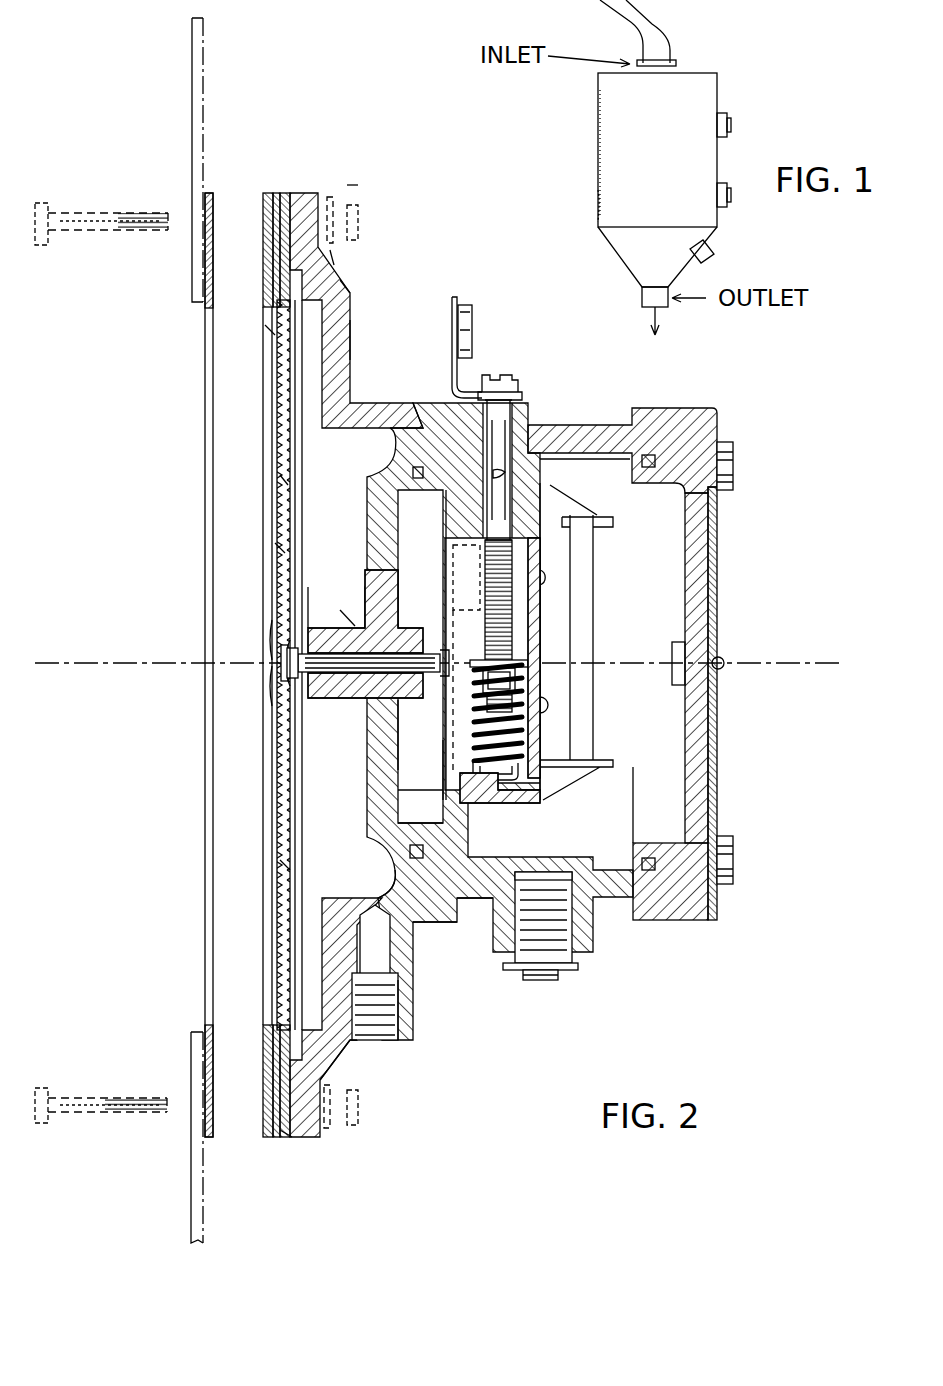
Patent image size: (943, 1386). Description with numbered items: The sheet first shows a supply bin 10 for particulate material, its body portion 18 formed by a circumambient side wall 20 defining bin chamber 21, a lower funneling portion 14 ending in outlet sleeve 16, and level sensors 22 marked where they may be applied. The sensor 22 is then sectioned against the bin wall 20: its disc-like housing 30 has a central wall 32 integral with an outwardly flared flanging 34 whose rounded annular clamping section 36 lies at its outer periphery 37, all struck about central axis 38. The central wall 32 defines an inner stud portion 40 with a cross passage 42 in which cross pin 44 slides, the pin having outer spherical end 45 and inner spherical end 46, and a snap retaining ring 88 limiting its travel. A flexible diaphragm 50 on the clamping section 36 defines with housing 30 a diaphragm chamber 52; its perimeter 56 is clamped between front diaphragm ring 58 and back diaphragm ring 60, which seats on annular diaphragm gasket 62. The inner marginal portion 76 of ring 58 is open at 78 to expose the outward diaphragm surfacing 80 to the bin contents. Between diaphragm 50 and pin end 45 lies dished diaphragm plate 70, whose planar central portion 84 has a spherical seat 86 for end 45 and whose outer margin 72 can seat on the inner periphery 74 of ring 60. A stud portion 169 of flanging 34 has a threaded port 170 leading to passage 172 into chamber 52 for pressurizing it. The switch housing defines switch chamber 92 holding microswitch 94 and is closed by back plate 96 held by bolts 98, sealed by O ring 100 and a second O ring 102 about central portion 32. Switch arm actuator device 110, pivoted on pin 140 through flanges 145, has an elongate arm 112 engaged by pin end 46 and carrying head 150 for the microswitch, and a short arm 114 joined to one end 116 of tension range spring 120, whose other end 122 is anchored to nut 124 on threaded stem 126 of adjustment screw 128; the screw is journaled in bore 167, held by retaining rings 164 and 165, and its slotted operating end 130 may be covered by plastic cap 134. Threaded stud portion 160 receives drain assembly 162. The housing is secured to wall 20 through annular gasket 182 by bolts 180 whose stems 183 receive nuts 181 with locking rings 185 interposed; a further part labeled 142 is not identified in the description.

In FIG. 1, the supply bin 10 is at (745, 62).
In FIG. 1, the lower bin funneling portion 14 is at (622, 238).
In FIG. 1, the sleeve portion 16 is at (640, 295).
In FIG. 1, the body portion 18 is at (607, 113).
In FIG. 1, the side wall 20 is at (600, 176).
In FIG. 2, the side wall 20 is at (205, 40).
In FIG. 1, the bin chamber 21 is at (600, 205).
In FIG. 2, the bin chamber 21 is at (140, 88).
In FIG. 1, the level sensor 22 is at (745, 129).
In FIG. 2, the level sensor 22 is at (366, 183).
In FIG. 2, the housing 30 is at (364, 297).
In FIG. 2, the central wall 32 is at (395, 403).
In FIG. 2, the outwardly flared flanging 34 is at (350, 340).
In FIG. 2, the annular clamping section 36 is at (300, 193).
In FIG. 2, the outer periphery 37 is at (315, 1140).
In FIG. 2, the central axis 38 is at (80, 660).
In FIG. 2, the inner stud portion 40 is at (330, 620).
In FIG. 2, the cross passage 42 is at (333, 676).
In FIG. 2, the cross pin 44 is at (348, 620).
In FIG. 2, the outer convexly spherically contoured end 45 is at (280, 678).
In FIG. 2, the inner convexly spherically contoured end 46 is at (423, 593).
In FIG. 2, the flexible diaphragm 50 is at (277, 428).
In FIG. 2, the diaphragm chamber 52 is at (276, 877).
In FIG. 2, the diaphragm perimeter 56 is at (276, 193).
In FIG. 2, the front diaphragm ring 58 is at (265, 193).
In FIG. 2, the back diaphragm ring 60 is at (285, 193).
In FIG. 2, the annular diaphragm gasket 62 is at (285, 1140).
In FIG. 2, the diaphragm plate 70 is at (297, 476).
In FIG. 2, the outer margin 72 is at (334, 262).
In FIG. 2, the inner periphery 74 is at (335, 1058).
In FIG. 2, the inner marginal portion 76 is at (262, 300).
In FIG. 2, the opening 78 is at (265, 330).
In FIG. 2, the external diaphragm surfacing 80 is at (282, 480).
In FIG. 2, the central portion 84 is at (275, 548).
In FIG. 2, the spherically contoured seat 86 is at (272, 633).
In FIG. 2, the snap type retaining ring 88 is at (278, 692).
In FIG. 2, the switch chamber 92 is at (615, 468).
In FIG. 2, the microswitch 94 is at (622, 576).
In FIG. 2, the back plate 96 is at (566, 390).
In FIG. 2, the bolts 98 is at (735, 862).
In FIG. 2, the sealing O ring 100 is at (712, 512).
In FIG. 2, the second sealing O ring 102 is at (432, 935).
In FIG. 2, the switch arm actuator device 110 is at (424, 792).
In FIG. 2, the elongate arm 112 is at (398, 775).
In FIG. 2, the short arm 114 is at (480, 803).
In FIG. 2, the spring end 116 is at (520, 770).
In FIG. 2, the tension spring 120 is at (541, 747).
In FIG. 2, the spring other end 122 is at (515, 690).
In FIG. 2, the nut 124 is at (500, 658).
In FIG. 2, the threaded stem 126 is at (540, 628).
In FIG. 2, the adjustment screw 128 is at (531, 447).
In FIG. 2, the slotted operating end 130 is at (492, 375).
In FIG. 2, the plastic cap 134 is at (460, 291).
In FIG. 2, the pin 140 is at (460, 905).
In FIG. 2, the body groove 142 is at (378, 875).
In FIG. 2, the flanges 145 is at (398, 838).
In FIG. 2, the head 150 is at (398, 735).
In FIG. 2, the threaded stud portion 160 is at (590, 935).
In FIG. 2, the drain assembly 162 is at (578, 984).
In FIG. 2, the retaining ring 164 is at (470, 540).
In FIG. 2, the retaining ring 165 is at (515, 392).
In FIG. 2, the bore 167 is at (505, 474).
In FIG. 2, the stud portion 169 is at (412, 1005).
In FIG. 2, the threaded port 170 is at (385, 1040).
In FIG. 2, the passage 172 is at (350, 1043).
In FIG. 2, the screws 180 is at (112, 210).
In FIG. 2, the securing nuts 181 is at (358, 208).
In FIG. 2, the annular gasket 182 is at (213, 1122).
In FIG. 2, the bolt stems 183 is at (78, 232).
In FIG. 2, the locking rings 185 is at (331, 197).